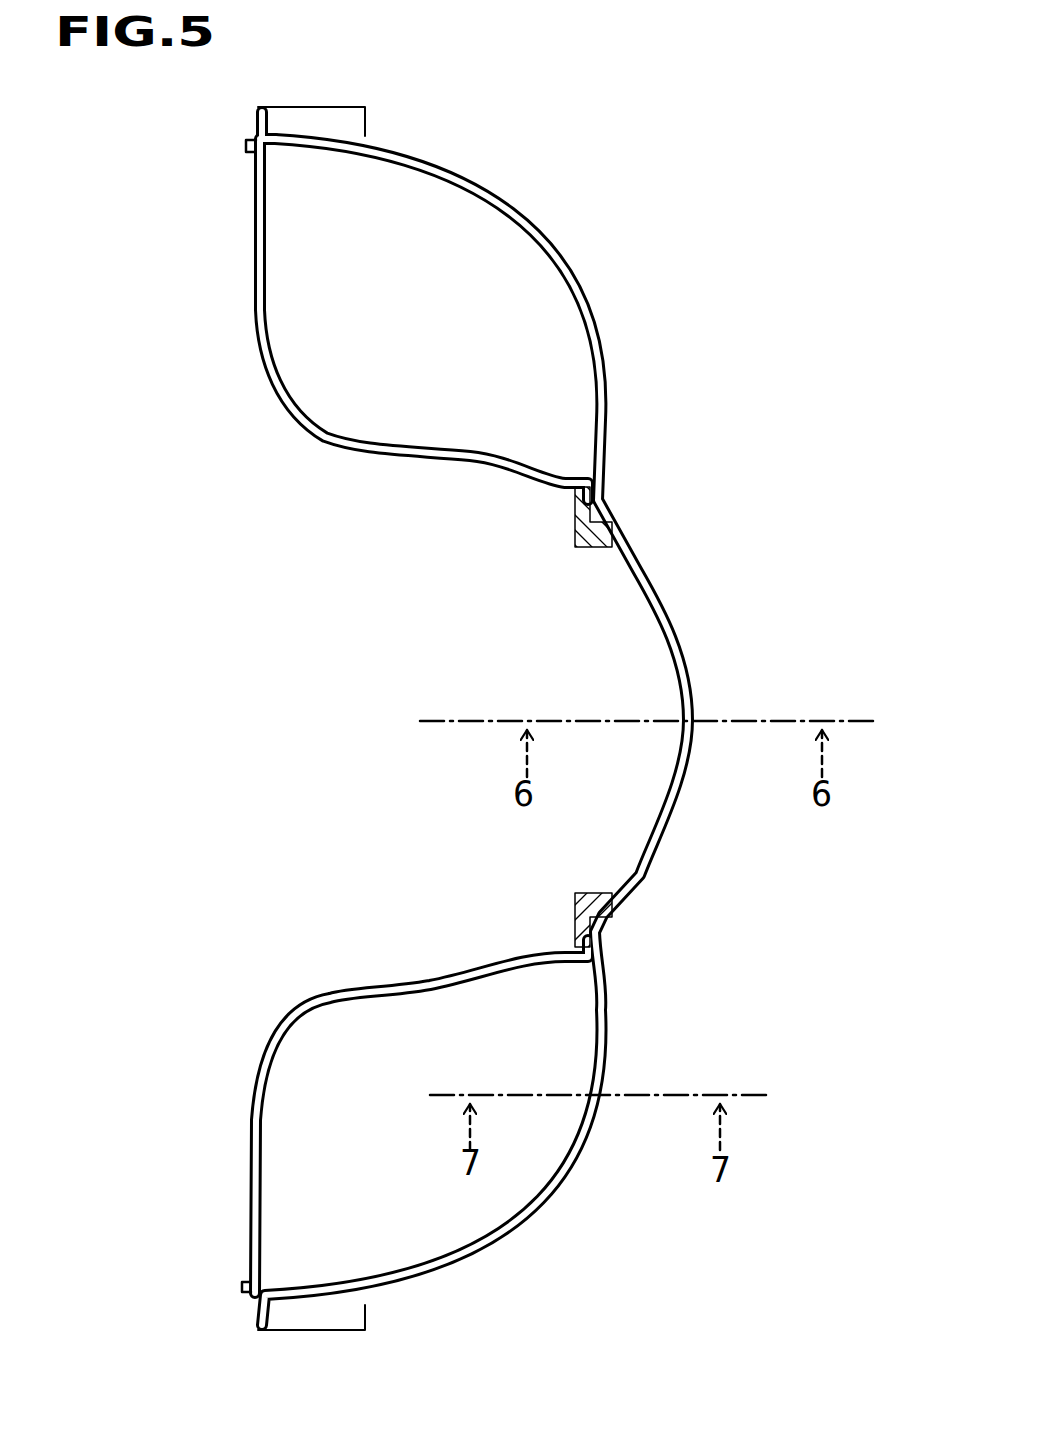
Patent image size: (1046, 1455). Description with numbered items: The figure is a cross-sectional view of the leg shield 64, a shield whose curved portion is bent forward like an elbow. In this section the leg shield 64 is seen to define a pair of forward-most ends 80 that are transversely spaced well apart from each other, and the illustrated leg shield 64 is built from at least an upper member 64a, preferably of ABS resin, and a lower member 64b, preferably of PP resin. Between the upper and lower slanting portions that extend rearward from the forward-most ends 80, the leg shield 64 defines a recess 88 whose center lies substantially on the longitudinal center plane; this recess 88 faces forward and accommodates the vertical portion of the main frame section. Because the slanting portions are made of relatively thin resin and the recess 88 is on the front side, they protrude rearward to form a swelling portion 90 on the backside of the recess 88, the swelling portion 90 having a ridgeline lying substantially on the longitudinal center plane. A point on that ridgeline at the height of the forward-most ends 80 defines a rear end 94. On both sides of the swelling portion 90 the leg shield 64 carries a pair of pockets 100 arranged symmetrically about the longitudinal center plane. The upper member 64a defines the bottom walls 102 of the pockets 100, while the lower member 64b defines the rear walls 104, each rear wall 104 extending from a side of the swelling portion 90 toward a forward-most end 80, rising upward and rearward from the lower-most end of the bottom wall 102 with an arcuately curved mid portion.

The leg shield 64 is at (610, 205).
The upper member 64a is at (224, 407).
The lower member 64b is at (628, 355).
The forward-most ends 80 is at (256, 112).
The recess 88 is at (534, 635).
The swelling portion 90 is at (674, 620).
The rear end 94 is at (692, 718).
The pockets 100 is at (410, 382).
The bottom walls 102 is at (265, 285).
The rear walls 104 is at (453, 175).